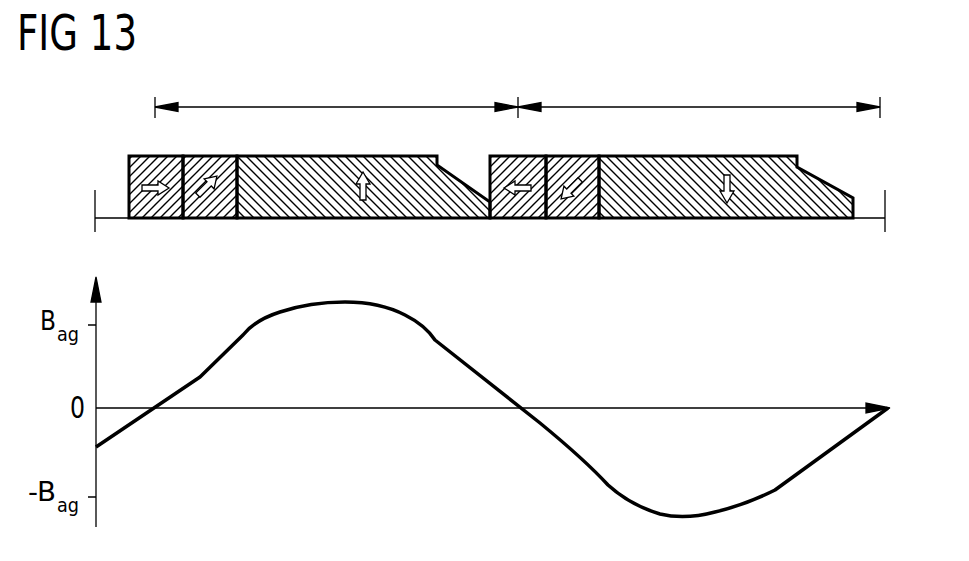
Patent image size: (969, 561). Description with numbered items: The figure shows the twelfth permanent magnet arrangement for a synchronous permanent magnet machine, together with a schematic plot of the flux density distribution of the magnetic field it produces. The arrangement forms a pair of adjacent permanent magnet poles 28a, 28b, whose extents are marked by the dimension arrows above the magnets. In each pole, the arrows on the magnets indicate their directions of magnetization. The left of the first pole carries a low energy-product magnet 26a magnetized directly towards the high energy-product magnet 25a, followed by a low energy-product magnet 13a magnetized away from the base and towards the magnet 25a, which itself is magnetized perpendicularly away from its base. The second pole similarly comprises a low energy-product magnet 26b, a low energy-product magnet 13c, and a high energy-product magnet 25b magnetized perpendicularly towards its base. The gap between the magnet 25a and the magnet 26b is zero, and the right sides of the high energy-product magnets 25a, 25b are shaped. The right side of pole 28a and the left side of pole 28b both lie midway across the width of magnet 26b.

The permanent magnet pole 28a is at (322, 107).
The permanent magnet pole 28b is at (683, 107).
The low energy-product magnet 26a is at (153, 218).
The low energy-product magnet 13a is at (213, 218).
The high energy-product magnet 25a is at (318, 218).
The low energy-product magnet 26b is at (520, 218).
The low energy-product magnet 13c is at (580, 218).
The high energy-product magnet 25b is at (685, 218).